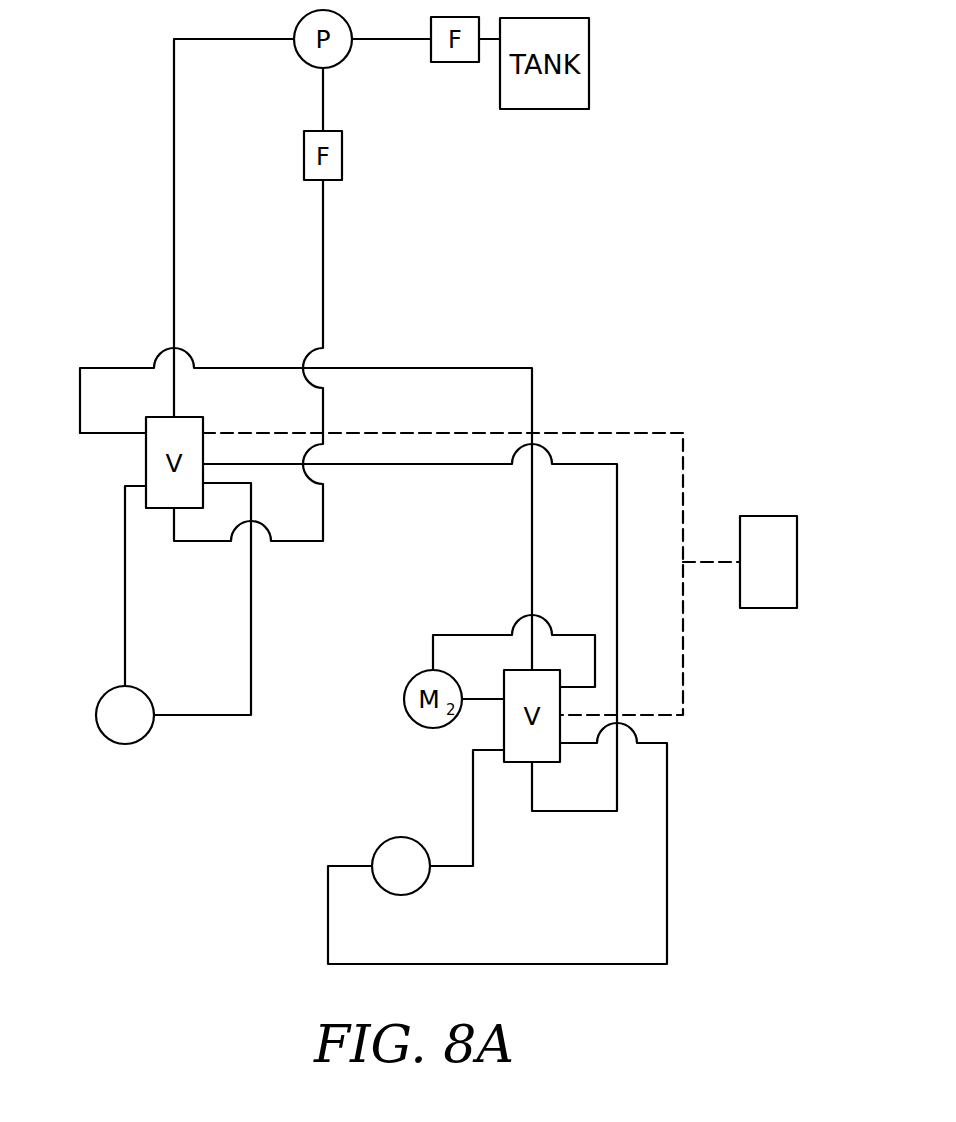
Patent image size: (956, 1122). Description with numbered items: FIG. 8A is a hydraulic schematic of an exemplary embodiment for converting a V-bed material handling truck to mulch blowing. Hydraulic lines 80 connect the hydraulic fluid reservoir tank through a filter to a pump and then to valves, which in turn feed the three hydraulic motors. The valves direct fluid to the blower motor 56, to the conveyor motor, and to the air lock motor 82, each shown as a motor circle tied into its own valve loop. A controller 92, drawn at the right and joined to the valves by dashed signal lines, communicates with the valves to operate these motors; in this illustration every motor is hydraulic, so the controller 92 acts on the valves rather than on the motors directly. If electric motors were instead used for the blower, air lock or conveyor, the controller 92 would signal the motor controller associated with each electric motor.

The hydraulic lines 80 is at (174, 196).
The blower motor 56 is at (106, 695).
The air lock motor 82 is at (396, 838).
The controller 92 is at (768, 516).